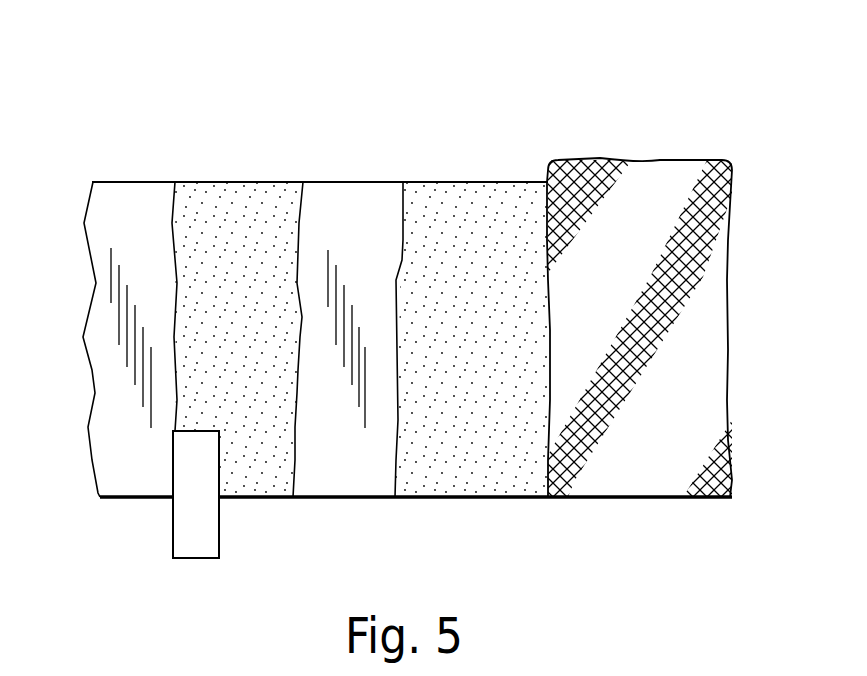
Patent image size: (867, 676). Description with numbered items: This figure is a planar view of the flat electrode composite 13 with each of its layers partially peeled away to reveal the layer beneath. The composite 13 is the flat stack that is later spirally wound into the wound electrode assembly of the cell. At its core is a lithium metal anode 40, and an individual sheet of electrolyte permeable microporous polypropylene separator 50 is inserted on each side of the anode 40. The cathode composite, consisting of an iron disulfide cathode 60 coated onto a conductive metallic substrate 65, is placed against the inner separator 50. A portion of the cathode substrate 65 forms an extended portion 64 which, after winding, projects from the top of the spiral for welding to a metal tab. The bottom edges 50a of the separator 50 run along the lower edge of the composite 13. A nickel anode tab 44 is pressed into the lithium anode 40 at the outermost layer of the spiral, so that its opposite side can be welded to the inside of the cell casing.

The flat electrode composite 13 is at (289, 72).
The anode 40 is at (240, 188).
The anode tab 44 is at (173, 528).
The separator 50 is at (132, 188).
The bottom edges of separator 50a is at (347, 488).
The cathode 60 is at (476, 187).
The extended portion of cathode substrate 64 is at (660, 163).
The cathode substrate 65 is at (633, 500).